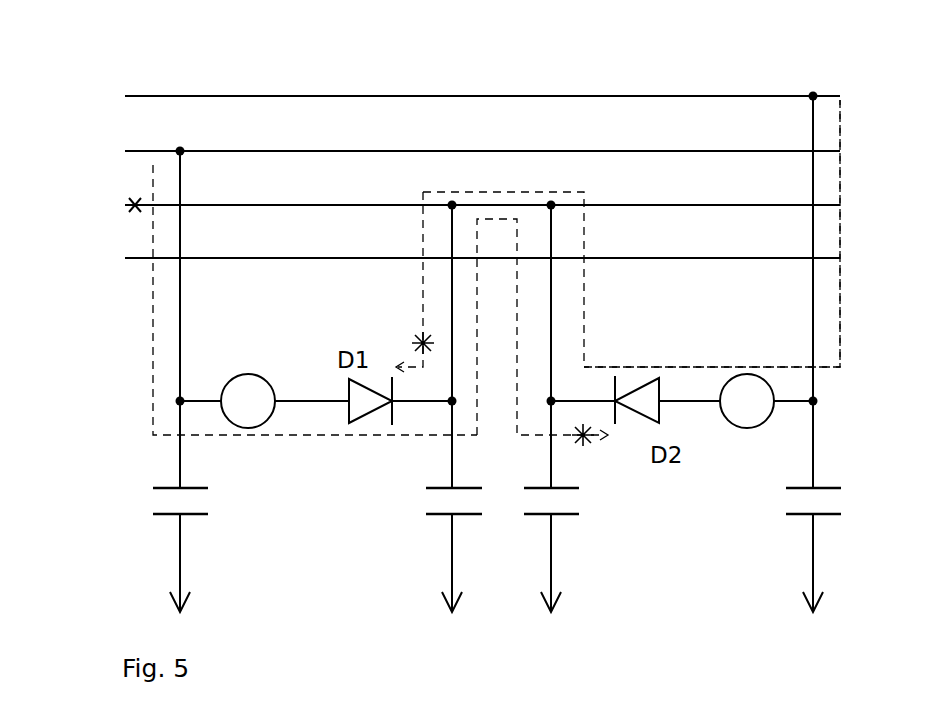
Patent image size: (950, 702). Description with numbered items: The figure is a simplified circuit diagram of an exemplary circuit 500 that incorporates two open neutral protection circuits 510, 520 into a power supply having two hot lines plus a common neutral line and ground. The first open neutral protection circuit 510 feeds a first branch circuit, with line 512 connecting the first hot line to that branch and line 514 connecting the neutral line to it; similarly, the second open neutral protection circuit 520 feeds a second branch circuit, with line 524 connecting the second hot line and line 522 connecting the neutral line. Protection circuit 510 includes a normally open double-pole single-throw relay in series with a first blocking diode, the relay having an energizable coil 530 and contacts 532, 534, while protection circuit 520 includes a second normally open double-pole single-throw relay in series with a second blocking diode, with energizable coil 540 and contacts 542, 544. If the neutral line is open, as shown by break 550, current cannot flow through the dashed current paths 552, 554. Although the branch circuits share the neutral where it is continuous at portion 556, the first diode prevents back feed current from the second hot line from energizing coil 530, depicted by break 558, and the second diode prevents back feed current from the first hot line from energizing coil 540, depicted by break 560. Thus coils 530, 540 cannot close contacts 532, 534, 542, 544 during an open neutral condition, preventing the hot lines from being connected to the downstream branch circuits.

The simplified circuit 500 is at (92, 62).
The open neutral protection circuit 510 is at (115, 352).
The line 512 is at (180, 543).
The line 514 is at (455, 547).
The open neutral protection circuit 520 is at (912, 320).
The line 522 is at (548, 531).
The line 524 is at (816, 543).
The energizable coil 530 is at (250, 374).
The contact 532 is at (208, 518).
The contact 534 is at (430, 518).
The energizable coil 540 is at (752, 372).
The contact 542 is at (573, 518).
The contact 544 is at (800, 518).
The break 550 is at (125, 214).
The current path 552 is at (423, 298).
The current path 554 is at (518, 310).
The portion of neutral line 556 is at (500, 205).
The break 558 is at (406, 336).
The break 560 is at (618, 446).